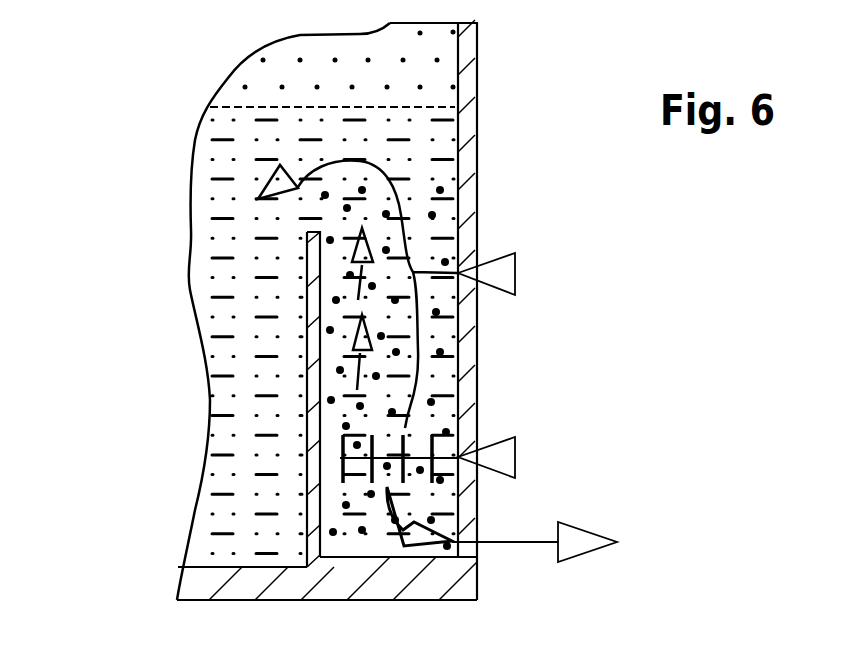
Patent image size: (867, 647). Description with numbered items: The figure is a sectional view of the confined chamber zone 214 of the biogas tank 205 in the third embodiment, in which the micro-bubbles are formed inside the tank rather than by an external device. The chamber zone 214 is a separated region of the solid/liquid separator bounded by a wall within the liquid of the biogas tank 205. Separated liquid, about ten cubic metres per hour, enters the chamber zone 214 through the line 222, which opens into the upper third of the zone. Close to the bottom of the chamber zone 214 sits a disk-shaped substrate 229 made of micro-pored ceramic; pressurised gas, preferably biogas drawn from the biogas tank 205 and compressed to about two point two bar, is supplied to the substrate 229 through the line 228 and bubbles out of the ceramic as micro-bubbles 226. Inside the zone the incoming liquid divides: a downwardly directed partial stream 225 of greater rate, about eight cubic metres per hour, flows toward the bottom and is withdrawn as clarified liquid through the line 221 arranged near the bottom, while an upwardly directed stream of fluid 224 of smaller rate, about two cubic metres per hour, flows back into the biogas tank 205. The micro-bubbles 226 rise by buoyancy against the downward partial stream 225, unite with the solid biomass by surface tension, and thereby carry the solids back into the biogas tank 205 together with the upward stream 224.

The biogas tank 205 is at (253, 508).
The confined chamber zone 214 is at (340, 542).
The line 221 is at (550, 529).
The line 222 is at (515, 273).
The upwardly directed stream of fluid 224 is at (405, 204).
The partial stream 225 is at (417, 362).
The micro-bubbles 226 is at (355, 347).
The line 228 is at (515, 457).
The disk-shaped substrate 229 is at (403, 445).